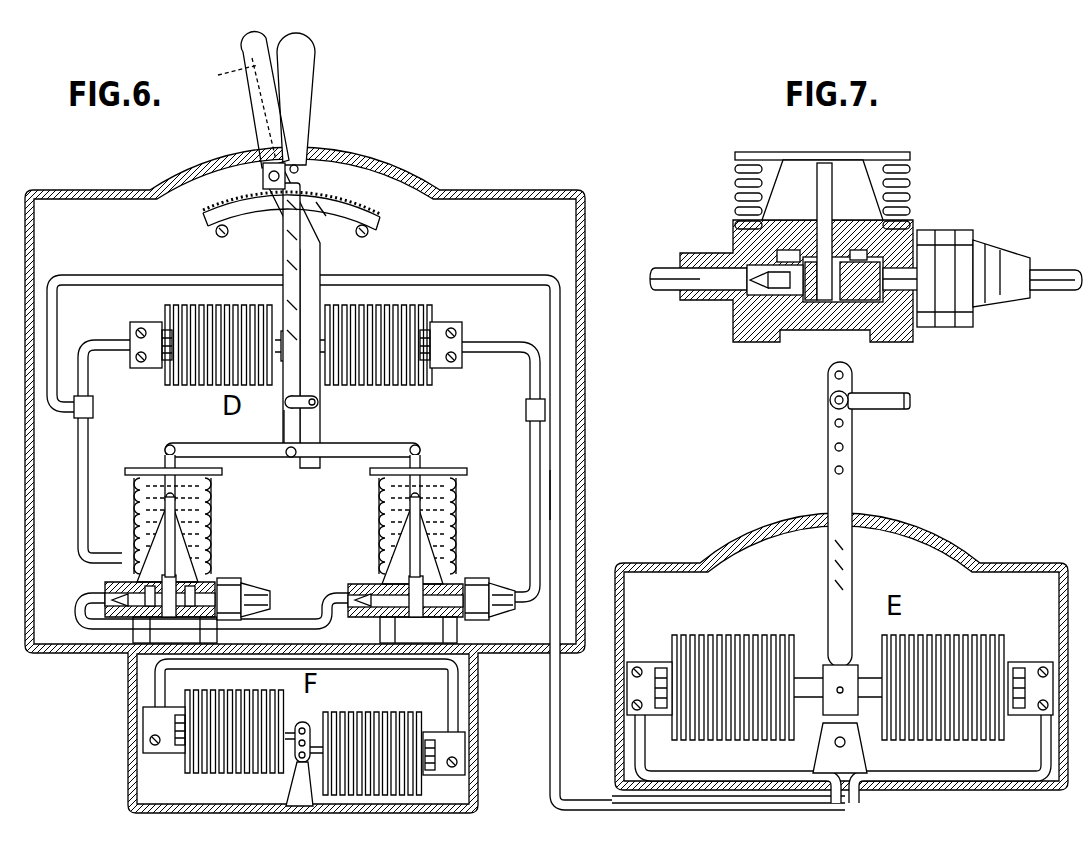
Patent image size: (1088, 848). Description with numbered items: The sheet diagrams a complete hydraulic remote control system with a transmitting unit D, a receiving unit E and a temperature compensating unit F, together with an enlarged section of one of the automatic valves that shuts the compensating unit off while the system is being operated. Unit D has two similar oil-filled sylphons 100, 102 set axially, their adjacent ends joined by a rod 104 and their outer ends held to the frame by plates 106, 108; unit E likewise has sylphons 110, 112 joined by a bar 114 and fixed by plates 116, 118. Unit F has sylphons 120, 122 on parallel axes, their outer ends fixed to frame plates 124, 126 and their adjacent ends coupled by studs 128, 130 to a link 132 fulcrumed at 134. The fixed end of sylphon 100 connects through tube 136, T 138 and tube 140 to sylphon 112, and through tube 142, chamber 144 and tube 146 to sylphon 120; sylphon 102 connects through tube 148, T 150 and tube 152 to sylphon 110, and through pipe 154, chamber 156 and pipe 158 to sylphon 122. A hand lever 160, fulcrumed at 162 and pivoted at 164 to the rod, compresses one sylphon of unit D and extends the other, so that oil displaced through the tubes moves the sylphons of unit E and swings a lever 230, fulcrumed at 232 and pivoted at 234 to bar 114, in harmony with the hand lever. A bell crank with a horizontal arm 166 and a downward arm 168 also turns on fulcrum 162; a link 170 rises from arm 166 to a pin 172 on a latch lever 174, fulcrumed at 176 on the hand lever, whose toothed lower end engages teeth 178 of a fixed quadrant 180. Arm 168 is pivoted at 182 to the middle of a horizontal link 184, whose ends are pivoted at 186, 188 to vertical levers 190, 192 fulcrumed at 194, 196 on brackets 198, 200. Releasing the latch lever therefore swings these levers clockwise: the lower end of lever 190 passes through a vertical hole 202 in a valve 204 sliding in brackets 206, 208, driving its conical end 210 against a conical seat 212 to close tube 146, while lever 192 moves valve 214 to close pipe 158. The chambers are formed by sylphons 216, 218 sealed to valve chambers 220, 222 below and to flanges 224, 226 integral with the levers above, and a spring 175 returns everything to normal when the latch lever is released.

In FIG. 6, the sylphon 100 is at (185, 386).
In FIG. 6, the sylphon 102 is at (376, 388).
In FIG. 6, the rod 104 is at (277, 356).
In FIG. 6, the plate 106 is at (145, 322).
In FIG. 6, the plate 108 is at (453, 322).
In FIG. 7, the sylphon 110 is at (728, 634).
In FIG. 7, the sylphon 112 is at (970, 634).
In FIG. 7, the bar 114 is at (808, 678).
In FIG. 7, the plate 116 is at (640, 661).
In FIG. 7, the plate 118 is at (1038, 661).
In FIG. 6, the sylphon 120 is at (202, 774).
In FIG. 6, the sylphon 122 is at (368, 712).
In FIG. 6, the frame plate 124 is at (146, 754).
In FIG. 6, the frame plate 126 is at (442, 776).
In FIG. 6, the stud 128 is at (290, 728).
In FIG. 6, the stud 130 is at (291, 796).
In FIG. 6, the link 132 is at (312, 725).
In FIG. 6, the fulcrum 134 is at (290, 766).
In FIG. 6, the tube 136 is at (98, 344).
In FIG. 6, the T 138 is at (93, 407).
In FIG. 6, the tube 140 is at (130, 280).
In FIG. 7, the tube 140 is at (1044, 748).
In FIG. 6, the tube 142 is at (78, 438).
In FIG. 7, the tube 142 is at (1040, 273).
In FIG. 6, the chamber 144 is at (208, 522).
In FIG. 6, the tube 146 is at (80, 611).
In FIG. 7, the tube 146 is at (660, 272).
In FIG. 6, the tube 148 is at (500, 341).
In FIG. 6, the T 150 is at (526, 412).
In FIG. 6, the tube 152 is at (560, 498).
In FIG. 7, the tube 152 is at (643, 758).
In FIG. 6, the pipe 154 is at (524, 515).
In FIG. 6, the chamber 156 is at (388, 540).
In FIG. 6, the pipe 158 is at (316, 628).
In FIG. 6, the manually operable lever 160 is at (309, 77).
In FIG. 6, the fulcrum 162 is at (286, 408).
In FIG. 6, the pivotal connection 164 is at (289, 343).
In FIG. 6, the horizontal arm 166 is at (316, 406).
In FIG. 6, the downwardly extending arm 168 is at (300, 434).
In FIG. 6, the link 170 is at (321, 267).
In FIG. 6, the pin 172 is at (268, 178).
In FIG. 6, the latch lever 174 is at (257, 98).
In FIG. 6, the spring 175 is at (222, 75).
In FIG. 6, the fulcrum 176 is at (299, 170).
In FIG. 6, the teeth 178 is at (348, 210).
In FIG. 6, the fixed quadrant 180 is at (321, 212).
In FIG. 6, the pivotal connection 182 is at (291, 457).
In FIG. 6, the horizontal link 184 is at (358, 450).
In FIG. 6, the pivotal connection 186 is at (172, 444).
In FIG. 6, the pivotal connection 188 is at (418, 445).
In FIG. 6, the vertical lever 190 is at (165, 463).
In FIG. 6, the vertical lever 192 is at (420, 472).
In FIG. 6, the fulcrum 194 is at (176, 497).
In FIG. 6, the fulcrum 196 is at (409, 498).
In FIG. 6, the bracket 198 is at (185, 545).
In FIG. 7, the bracket 198 is at (850, 172).
In FIG. 6, the bracket 200 is at (430, 550).
In FIG. 7, the vertical hole 202 is at (838, 265).
In FIG. 6, the valve 204 is at (170, 615).
In FIG. 7, the valve 204 is at (830, 300).
In FIG. 6, the bracket 206 is at (149, 586).
In FIG. 7, the bracket 206 is at (790, 256).
In FIG. 6, the bracket 208 is at (190, 586).
In FIG. 7, the bracket 208 is at (862, 256).
In FIG. 6, the conical end 210 is at (135, 604).
In FIG. 7, the conical end 210 is at (766, 272).
In FIG. 7, the conical seat 212 is at (745, 318).
In FIG. 6, the valve 214 is at (420, 617).
In FIG. 6, the sylphon 216 is at (212, 480).
In FIG. 7, the sylphon 216 is at (905, 163).
In FIG. 6, the sylphon 218 is at (452, 502).
In FIG. 6, the valve chamber 220 is at (128, 584).
In FIG. 6, the valve chamber 222 is at (372, 585).
In FIG. 6, the flange 224 is at (125, 471).
In FIG. 6, the flange 226 is at (372, 469).
In FIG. 7, the lever 230 is at (853, 568).
In FIG. 7, the fulcrum 232 is at (846, 745).
In FIG. 7, the pivotal connection 234 is at (843, 686).